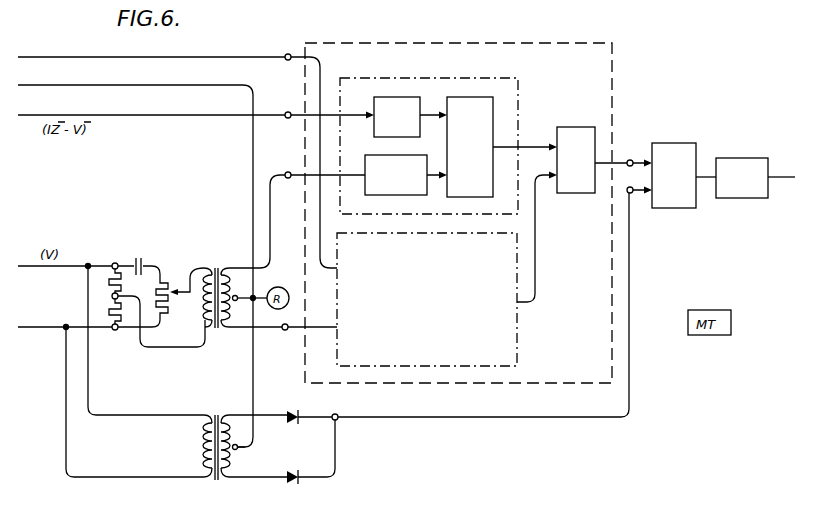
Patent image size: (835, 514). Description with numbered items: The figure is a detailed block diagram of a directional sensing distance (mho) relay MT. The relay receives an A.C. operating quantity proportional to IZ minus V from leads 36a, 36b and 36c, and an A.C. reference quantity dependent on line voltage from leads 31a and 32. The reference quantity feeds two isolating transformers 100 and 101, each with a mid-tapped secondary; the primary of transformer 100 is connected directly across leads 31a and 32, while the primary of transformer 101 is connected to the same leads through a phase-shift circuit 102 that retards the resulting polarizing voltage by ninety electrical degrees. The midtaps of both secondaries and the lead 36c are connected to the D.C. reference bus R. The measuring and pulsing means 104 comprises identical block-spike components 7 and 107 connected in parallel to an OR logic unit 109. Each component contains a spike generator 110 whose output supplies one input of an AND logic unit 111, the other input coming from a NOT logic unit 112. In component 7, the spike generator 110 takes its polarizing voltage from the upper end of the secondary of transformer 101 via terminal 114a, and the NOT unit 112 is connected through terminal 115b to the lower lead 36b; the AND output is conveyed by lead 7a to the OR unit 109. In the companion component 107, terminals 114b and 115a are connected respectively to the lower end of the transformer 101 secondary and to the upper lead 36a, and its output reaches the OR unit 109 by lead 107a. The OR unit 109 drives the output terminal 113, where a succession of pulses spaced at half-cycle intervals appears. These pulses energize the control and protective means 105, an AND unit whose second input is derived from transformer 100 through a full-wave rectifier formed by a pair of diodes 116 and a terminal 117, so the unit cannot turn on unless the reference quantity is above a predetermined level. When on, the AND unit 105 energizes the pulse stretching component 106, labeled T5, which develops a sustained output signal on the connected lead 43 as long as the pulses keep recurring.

The upper lead 36a is at (68, 56).
The lower lead 36b is at (68, 113).
The lead 36c is at (68, 84).
The terminal 115a is at (288, 54).
The terminal 115b is at (288, 112).
The terminal 114a is at (288, 172).
The terminal 114b is at (285, 330).
The NOT logic unit 112 is at (400, 96).
The AND logic unit 111 is at (481, 97).
The spike generator 110 is at (368, 155).
The block-spike component 7 is at (518, 92).
The lead 7a is at (533, 145).
The measuring and pulsing means 104 is at (589, 43).
The OR logic unit 109 is at (579, 127).
The output terminal 113 is at (630, 160).
The control and protective means 105 is at (678, 143).
The pulse stretching component 106 is at (742, 158).
The lead 43 is at (785, 180).
The terminal 117 is at (627, 191).
The lead 107a is at (535, 245).
The block-spike component 107 is at (517, 343).
The lead 31a is at (35, 268).
The lead 32 is at (35, 329).
The phase-shift circuit 102 is at (157, 251).
The isolating transformer 101 is at (233, 251).
The isolating transformer 100 is at (233, 407).
The diodes 116 is at (308, 452).